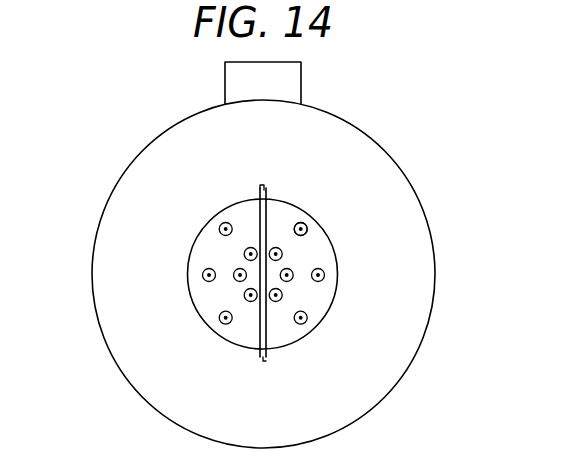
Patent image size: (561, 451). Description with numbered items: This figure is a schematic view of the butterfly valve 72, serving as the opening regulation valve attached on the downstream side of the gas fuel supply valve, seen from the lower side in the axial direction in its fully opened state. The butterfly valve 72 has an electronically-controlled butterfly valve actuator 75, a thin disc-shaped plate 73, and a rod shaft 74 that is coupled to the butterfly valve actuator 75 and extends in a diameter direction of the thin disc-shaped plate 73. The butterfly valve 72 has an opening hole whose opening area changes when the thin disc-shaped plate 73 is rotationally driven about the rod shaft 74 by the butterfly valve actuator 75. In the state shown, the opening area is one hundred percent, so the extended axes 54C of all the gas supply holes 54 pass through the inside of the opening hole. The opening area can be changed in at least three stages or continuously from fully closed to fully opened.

The butterfly valve 72 is at (377, 121).
The thin disc-shaped plate 73 is at (266, 197).
The rod shaft 74 is at (262, 187).
The butterfly valve actuator 75 is at (247, 82).
The gas supply holes 54 is at (220, 225).
The extended axes 54C is at (307, 226).